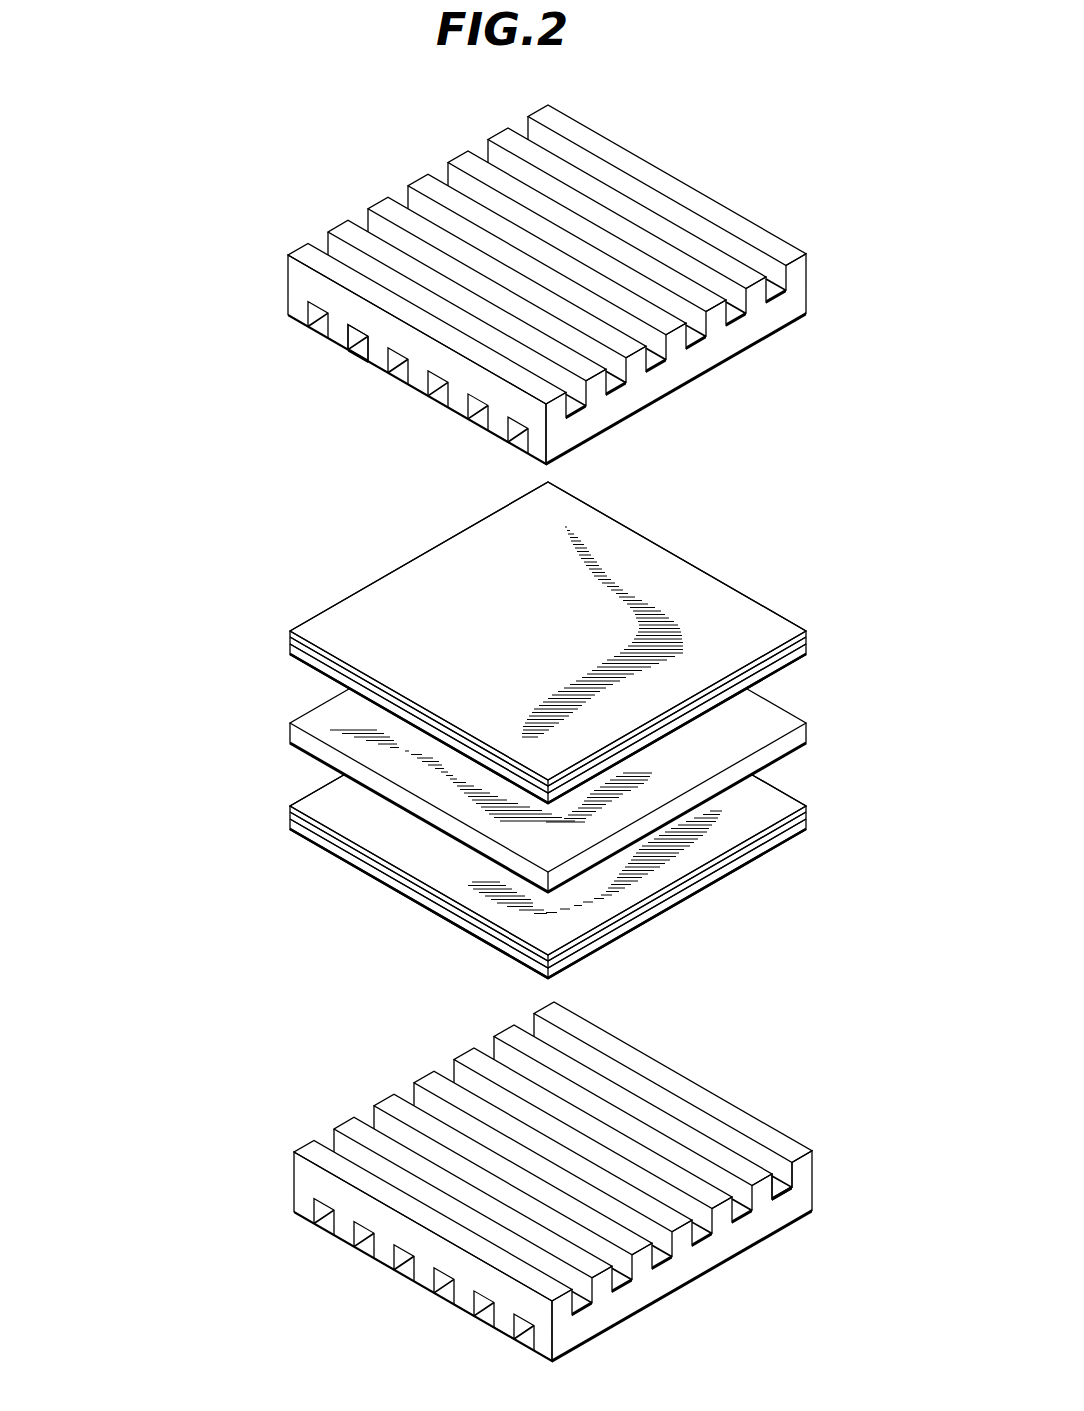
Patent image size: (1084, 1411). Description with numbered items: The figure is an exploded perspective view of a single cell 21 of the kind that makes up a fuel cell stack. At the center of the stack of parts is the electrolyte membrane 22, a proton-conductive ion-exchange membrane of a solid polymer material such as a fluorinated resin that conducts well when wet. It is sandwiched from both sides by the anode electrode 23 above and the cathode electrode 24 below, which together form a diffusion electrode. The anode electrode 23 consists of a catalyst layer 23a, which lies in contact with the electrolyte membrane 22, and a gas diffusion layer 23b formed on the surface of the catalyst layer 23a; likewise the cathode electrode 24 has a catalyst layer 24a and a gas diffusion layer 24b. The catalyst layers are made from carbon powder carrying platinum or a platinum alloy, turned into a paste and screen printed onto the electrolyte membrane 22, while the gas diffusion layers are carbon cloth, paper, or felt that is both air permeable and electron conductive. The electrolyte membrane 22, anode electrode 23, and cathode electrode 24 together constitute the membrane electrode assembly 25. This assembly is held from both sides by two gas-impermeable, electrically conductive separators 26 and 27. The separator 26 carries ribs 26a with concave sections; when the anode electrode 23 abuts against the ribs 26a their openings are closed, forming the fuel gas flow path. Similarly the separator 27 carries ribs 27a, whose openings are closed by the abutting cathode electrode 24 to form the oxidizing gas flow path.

The cell 21 is at (131, 234).
The electrolyte membrane 22 is at (290, 734).
The anode electrode 23 is at (198, 604).
The catalyst layer 23a is at (290, 649).
The gas diffusion layer 23b is at (290, 633).
The cathode electrode 24 is at (198, 784).
The catalyst layer 24a is at (290, 808).
The gas diffusion layer 24b is at (290, 823).
The membrane electrode assembly 25 is at (162, 604).
The separator 26 is at (290, 266).
The ribs 26a is at (358, 345).
The separator 27 is at (810, 1194).
The ribs 27a is at (760, 1186).